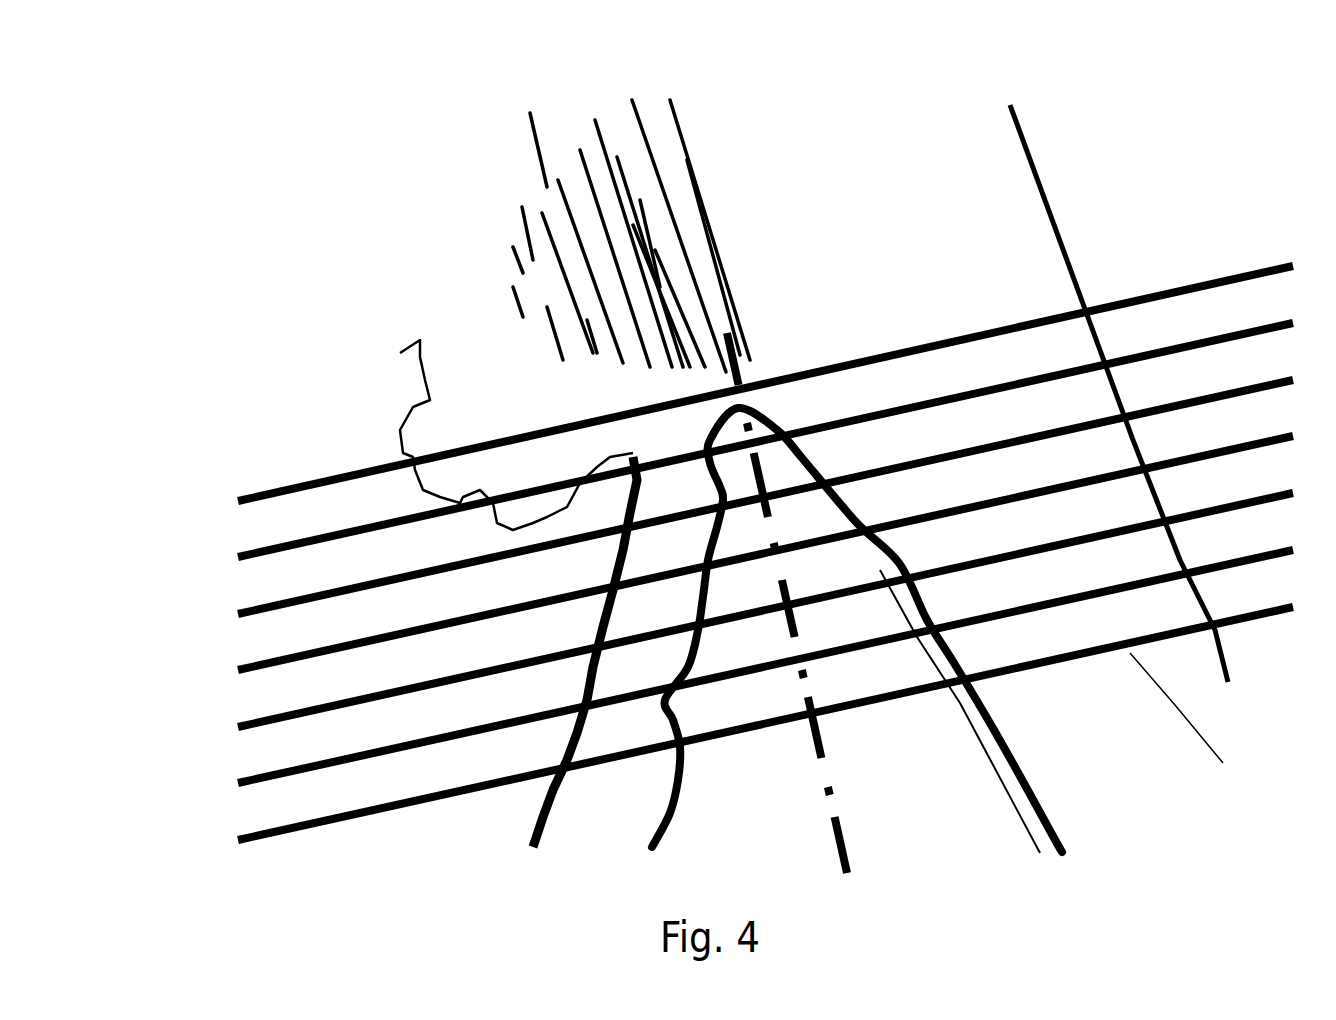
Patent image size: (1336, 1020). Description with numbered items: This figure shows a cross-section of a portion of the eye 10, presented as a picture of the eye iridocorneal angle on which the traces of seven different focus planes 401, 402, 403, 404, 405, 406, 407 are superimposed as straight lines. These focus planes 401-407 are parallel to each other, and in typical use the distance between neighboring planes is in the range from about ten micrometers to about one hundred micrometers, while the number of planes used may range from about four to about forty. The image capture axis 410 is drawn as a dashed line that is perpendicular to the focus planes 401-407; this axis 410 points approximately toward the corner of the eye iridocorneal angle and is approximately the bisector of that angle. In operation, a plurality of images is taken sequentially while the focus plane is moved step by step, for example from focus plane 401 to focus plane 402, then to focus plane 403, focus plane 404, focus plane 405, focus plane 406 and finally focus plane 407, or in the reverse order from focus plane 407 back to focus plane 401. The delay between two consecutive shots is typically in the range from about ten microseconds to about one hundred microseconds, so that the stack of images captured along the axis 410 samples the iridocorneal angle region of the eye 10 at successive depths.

The ultrasound image 10 is at (308, 81).
The focus plane 401 is at (725, 395).
The focus plane 402 is at (725, 452).
The focus plane 403 is at (725, 509).
The focus plane 404 is at (725, 565).
The focus plane 405 is at (725, 622).
The focus plane 406 is at (725, 679).
The focus plane 407 is at (725, 735).
The image capture axis 410 is at (805, 636).